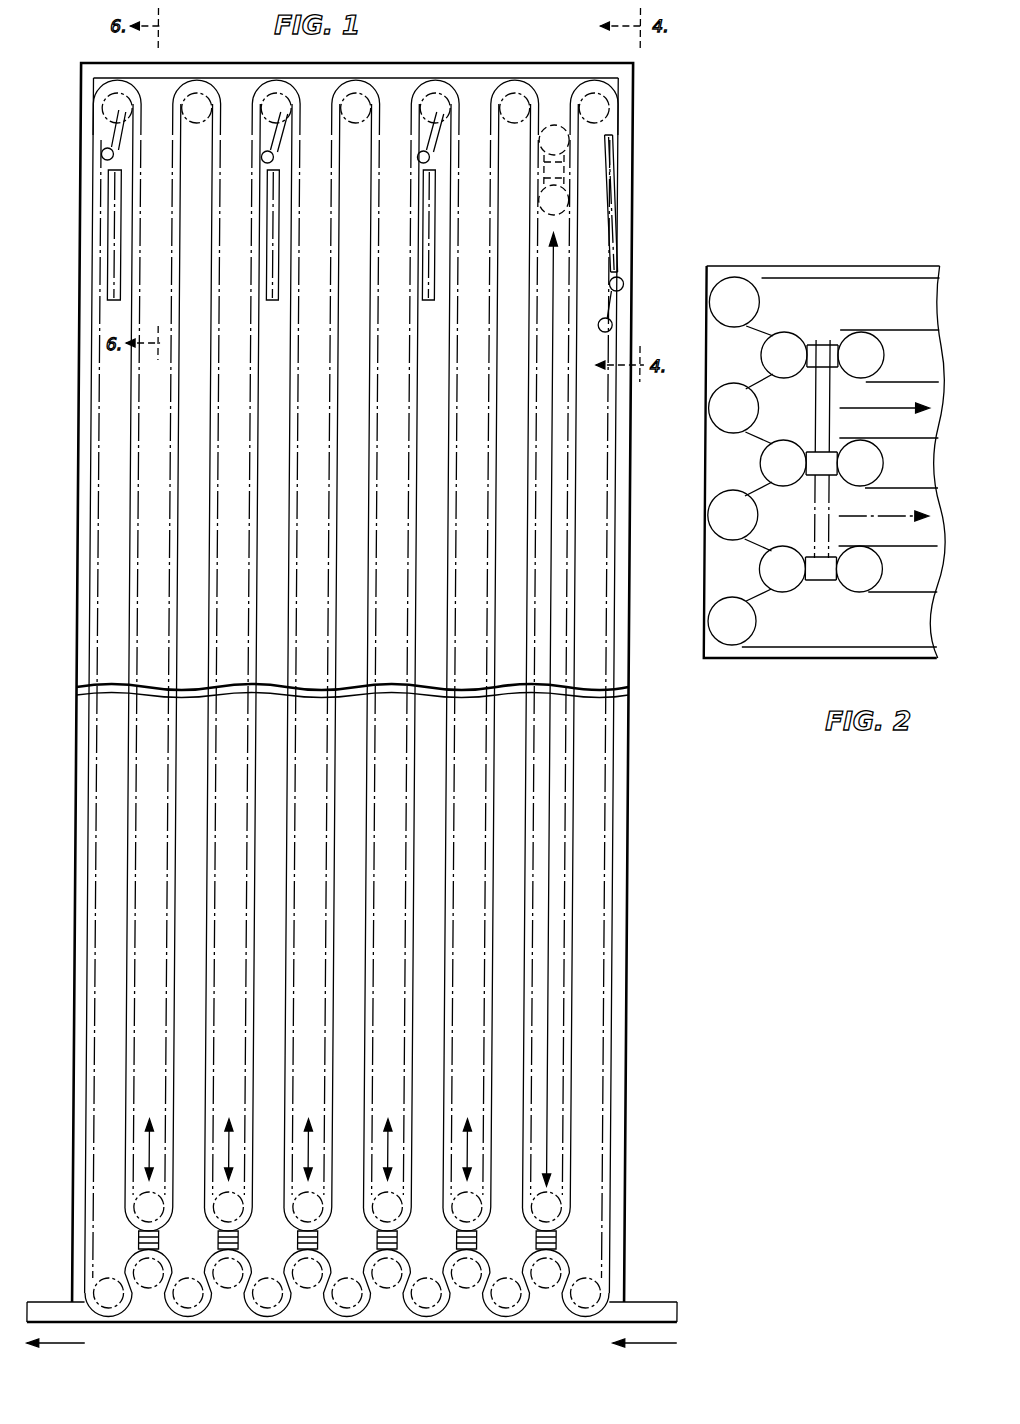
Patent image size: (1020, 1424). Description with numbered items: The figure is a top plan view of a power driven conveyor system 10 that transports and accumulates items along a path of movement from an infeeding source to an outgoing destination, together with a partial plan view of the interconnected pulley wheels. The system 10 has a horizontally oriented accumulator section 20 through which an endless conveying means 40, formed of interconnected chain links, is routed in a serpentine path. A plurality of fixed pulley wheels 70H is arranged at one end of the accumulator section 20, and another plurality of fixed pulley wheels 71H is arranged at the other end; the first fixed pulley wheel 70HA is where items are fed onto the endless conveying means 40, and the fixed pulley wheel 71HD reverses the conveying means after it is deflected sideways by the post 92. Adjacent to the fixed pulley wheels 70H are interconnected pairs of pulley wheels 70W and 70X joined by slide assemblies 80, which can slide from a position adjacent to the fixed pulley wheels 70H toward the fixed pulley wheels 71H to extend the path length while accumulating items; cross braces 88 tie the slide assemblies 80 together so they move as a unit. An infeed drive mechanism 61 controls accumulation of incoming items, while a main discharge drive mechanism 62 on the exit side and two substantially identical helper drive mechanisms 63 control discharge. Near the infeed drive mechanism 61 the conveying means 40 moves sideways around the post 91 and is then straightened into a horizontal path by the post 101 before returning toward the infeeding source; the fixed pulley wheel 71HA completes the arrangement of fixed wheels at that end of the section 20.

In FIG. 1, the power driven conveyor system 10 is at (633, 998).
In FIG. 1, the accumulator section 20 is at (626, 936).
In FIG. 2, the accumulator section 20 is at (792, 658).
In FIG. 1, the endless conveying means 40 is at (88, 322).
In FIG. 2, the endless conveying means 40 is at (758, 648).
In FIG. 1, the infeed drive mechanism 61 is at (614, 218).
In FIG. 1, the discharge drive mechanism 62 is at (100, 186).
In FIG. 1, the helper drive mechanism 63 is at (260, 186).
In FIG. 1, the fixed pulley wheel 70H is at (188, 1300).
In FIG. 2, the fixed pulley wheel 70H is at (738, 285).
In FIG. 1, the first fixed pulley wheel 70HA is at (586, 1302).
In FIG. 1, the pulley wheel 70W is at (540, 196).
In FIG. 2, the pulley wheel 70W is at (764, 356).
In FIG. 1, the pulley wheel 70X is at (548, 124).
In FIG. 2, the pulley wheel 70X is at (858, 340).
In FIG. 1, the fixed pulley wheel 71H is at (196, 106).
In FIG. 1, the fixed pulley wheel 71HD is at (112, 96).
In FIG. 1, the hairpin tube bend 71HA is at (587, 98).
In FIG. 1, the slide assembly 80 is at (538, 172).
In FIG. 2, the slide assembly 80 is at (810, 344).
In FIG. 2, the cross brace 88 is at (811, 406).
In FIG. 1, the post 91 is at (618, 279).
In FIG. 1, the post 92 is at (98, 148).
In FIG. 1, the post 101 is at (608, 322).